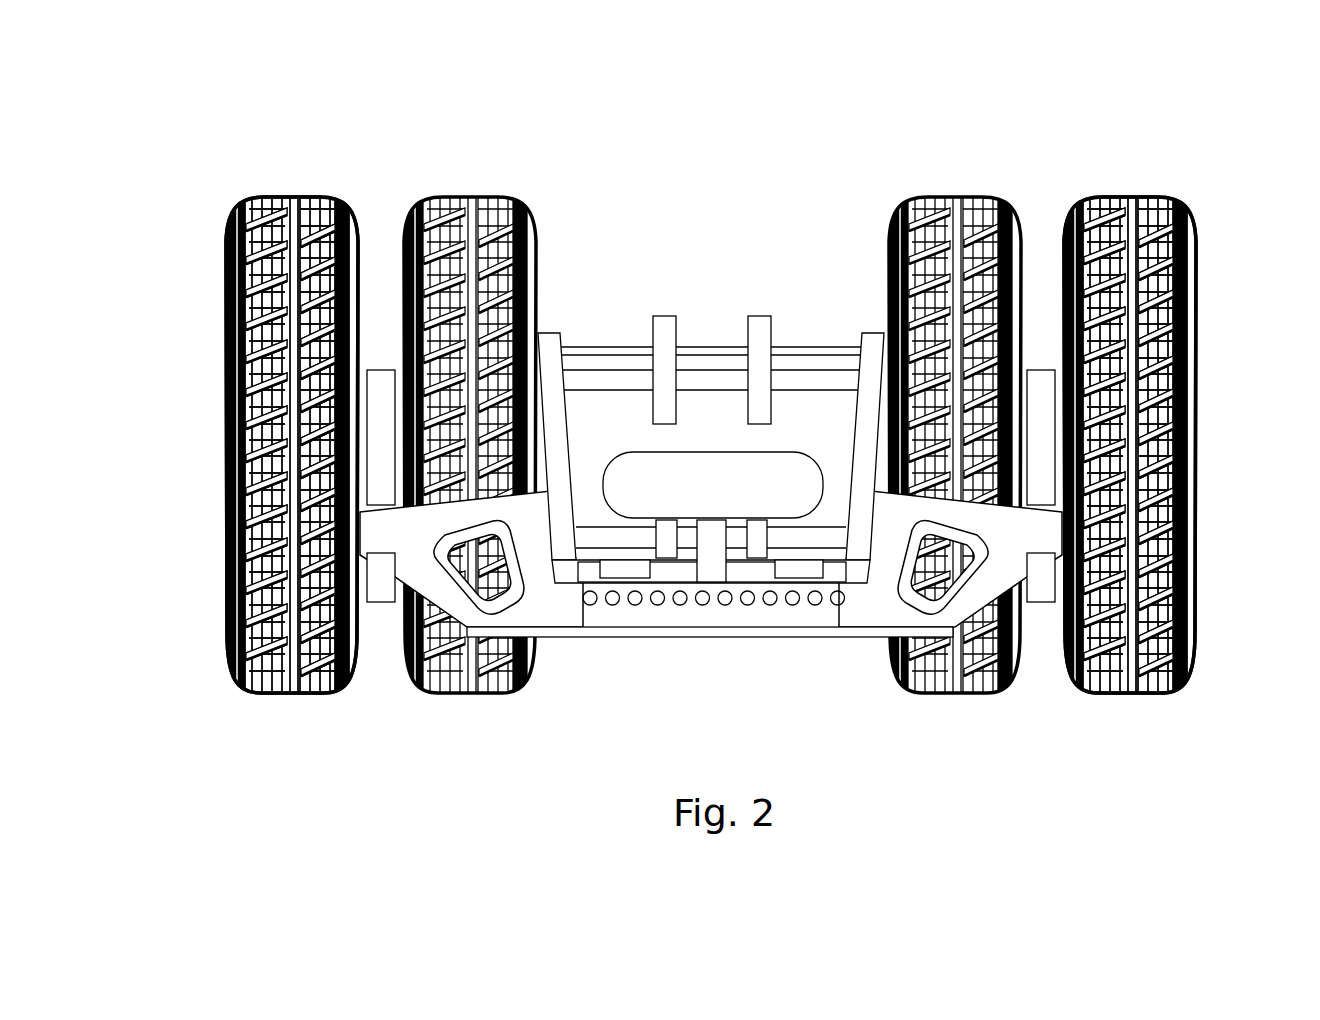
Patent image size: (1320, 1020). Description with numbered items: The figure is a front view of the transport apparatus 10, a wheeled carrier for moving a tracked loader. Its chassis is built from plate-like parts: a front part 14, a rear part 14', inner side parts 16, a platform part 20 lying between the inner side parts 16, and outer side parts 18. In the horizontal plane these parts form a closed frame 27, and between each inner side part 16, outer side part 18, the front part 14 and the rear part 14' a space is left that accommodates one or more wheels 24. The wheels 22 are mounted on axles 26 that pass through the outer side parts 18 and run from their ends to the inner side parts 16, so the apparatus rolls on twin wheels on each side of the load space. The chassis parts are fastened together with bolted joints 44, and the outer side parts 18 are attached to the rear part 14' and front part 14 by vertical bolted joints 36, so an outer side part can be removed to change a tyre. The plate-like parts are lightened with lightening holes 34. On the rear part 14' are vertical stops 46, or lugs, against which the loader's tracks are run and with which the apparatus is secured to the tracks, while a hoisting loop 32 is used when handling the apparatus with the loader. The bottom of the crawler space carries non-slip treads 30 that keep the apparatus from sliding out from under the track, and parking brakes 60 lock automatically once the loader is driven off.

The transport apparatus 10 is at (237, 122).
The front part 14 is at (710, 684).
The rear part 14' is at (822, 422).
The inner side parts 16 is at (550, 412).
The outer side parts 18 is at (378, 385).
The platform part 20 is at (757, 580).
The wheels 22 is at (200, 398).
The wheels 24 is at (437, 195).
The axles 26 is at (543, 490).
The closed frame 27 is at (580, 662).
The non-slip treads 30 is at (636, 606).
The hoisting loop 32 is at (612, 346).
The lightening holes 34 is at (690, 454).
The vertical bolted joints 36 is at (370, 512).
The bolted joints 44 is at (803, 582).
The vertical stops 46 is at (758, 318).
The parking brakes 60 is at (712, 586).